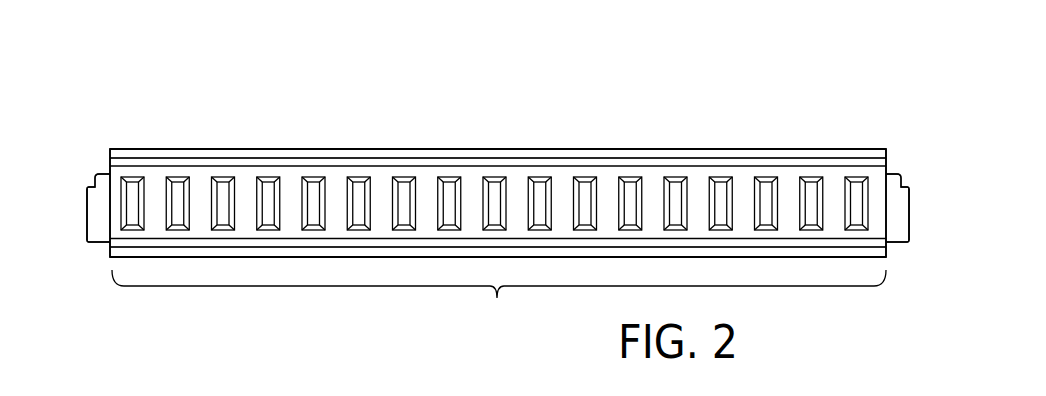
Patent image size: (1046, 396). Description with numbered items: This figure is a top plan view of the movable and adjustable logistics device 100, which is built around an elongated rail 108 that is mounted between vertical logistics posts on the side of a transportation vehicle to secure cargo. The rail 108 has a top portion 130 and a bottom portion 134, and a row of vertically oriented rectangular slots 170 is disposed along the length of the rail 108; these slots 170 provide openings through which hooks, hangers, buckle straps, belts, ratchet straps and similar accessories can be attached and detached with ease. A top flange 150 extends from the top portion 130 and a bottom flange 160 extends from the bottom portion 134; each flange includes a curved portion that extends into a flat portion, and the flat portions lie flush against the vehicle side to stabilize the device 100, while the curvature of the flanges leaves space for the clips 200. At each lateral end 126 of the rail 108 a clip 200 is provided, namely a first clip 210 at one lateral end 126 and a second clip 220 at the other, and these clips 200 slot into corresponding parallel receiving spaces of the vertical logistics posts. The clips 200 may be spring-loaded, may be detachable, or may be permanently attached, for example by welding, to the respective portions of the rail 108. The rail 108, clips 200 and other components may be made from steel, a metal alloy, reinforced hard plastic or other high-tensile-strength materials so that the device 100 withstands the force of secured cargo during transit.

The movable and adjustable logistics device 100 is at (772, 106).
The rail 108 is at (876, 126).
The lateral end 126 is at (82, 212).
The top portion 130 is at (478, 148).
The bottom portion 134 is at (499, 304).
The top flange 150 is at (165, 157).
The bottom flange 160 is at (125, 250).
The slots 170 is at (810, 222).
The clips 200 is at (72, 168).
The first clip 210 is at (97, 203).
The second clip 220 is at (895, 223).